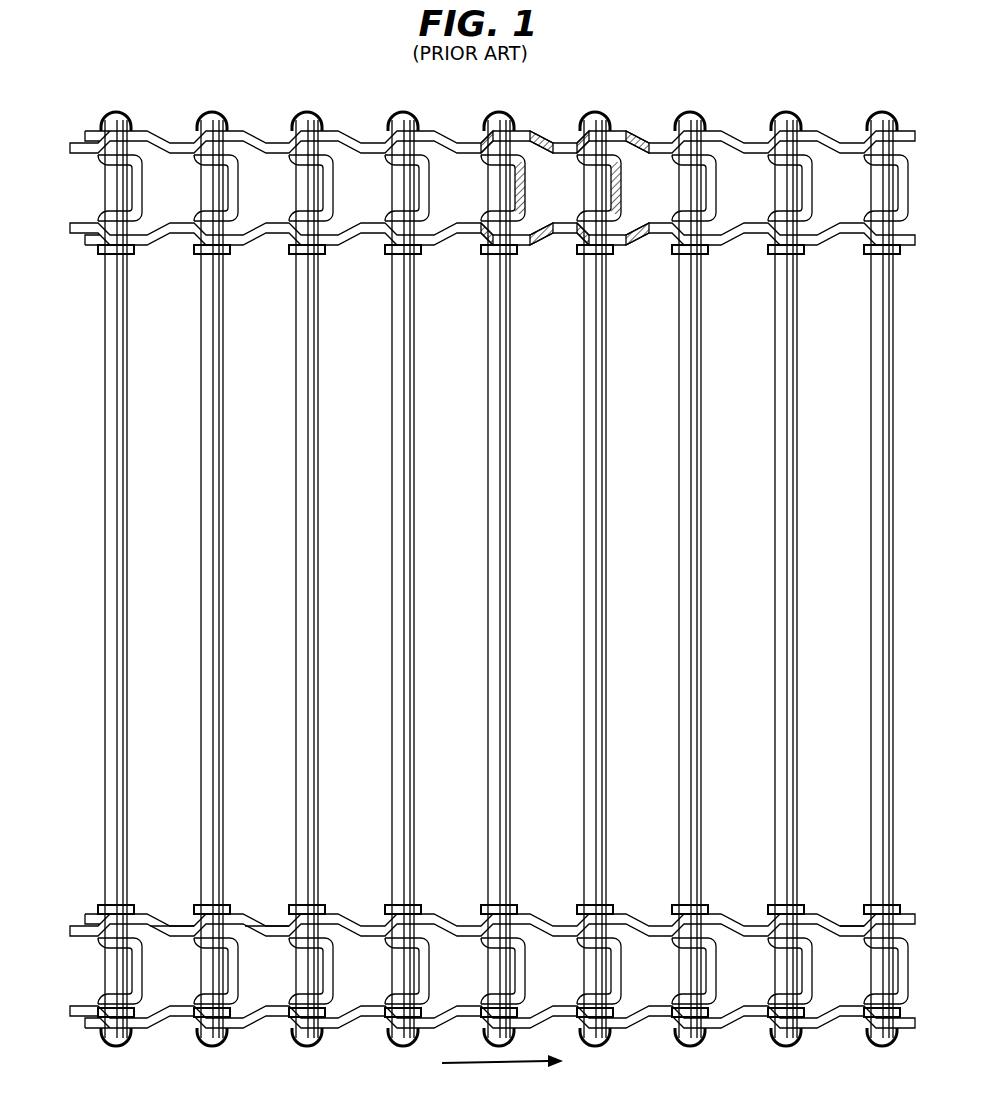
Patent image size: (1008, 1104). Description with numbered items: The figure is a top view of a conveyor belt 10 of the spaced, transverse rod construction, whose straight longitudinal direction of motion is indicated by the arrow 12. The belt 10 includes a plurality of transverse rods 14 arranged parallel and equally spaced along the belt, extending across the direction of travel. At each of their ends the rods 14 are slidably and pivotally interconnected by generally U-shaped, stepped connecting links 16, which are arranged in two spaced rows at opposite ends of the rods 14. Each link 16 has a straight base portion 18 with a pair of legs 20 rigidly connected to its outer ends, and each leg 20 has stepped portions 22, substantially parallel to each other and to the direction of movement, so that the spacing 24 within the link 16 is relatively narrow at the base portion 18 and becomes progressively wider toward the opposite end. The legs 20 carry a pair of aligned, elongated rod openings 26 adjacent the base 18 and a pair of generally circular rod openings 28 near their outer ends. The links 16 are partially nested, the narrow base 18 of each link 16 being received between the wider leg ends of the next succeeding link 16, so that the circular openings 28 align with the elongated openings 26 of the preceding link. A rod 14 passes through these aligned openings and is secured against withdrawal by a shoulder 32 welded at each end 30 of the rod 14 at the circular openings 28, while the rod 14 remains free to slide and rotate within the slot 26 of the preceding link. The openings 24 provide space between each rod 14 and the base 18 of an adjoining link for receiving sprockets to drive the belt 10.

The conveyor belt 10 is at (485, 582).
The arrow 12 is at (478, 1067).
The transverse rods 14 is at (210, 567).
The connecting links 16 is at (485, 577).
The base portion 18 is at (513, 190).
The legs 20 is at (252, 126).
The stepped portions 22 is at (278, 138).
The spacing 24 is at (171, 933).
The elongated rod openings 26 is at (470, 137).
The circular rod openings 28 is at (508, 126).
The rod ends 30 is at (206, 181).
The shoulder 32 is at (126, 117).